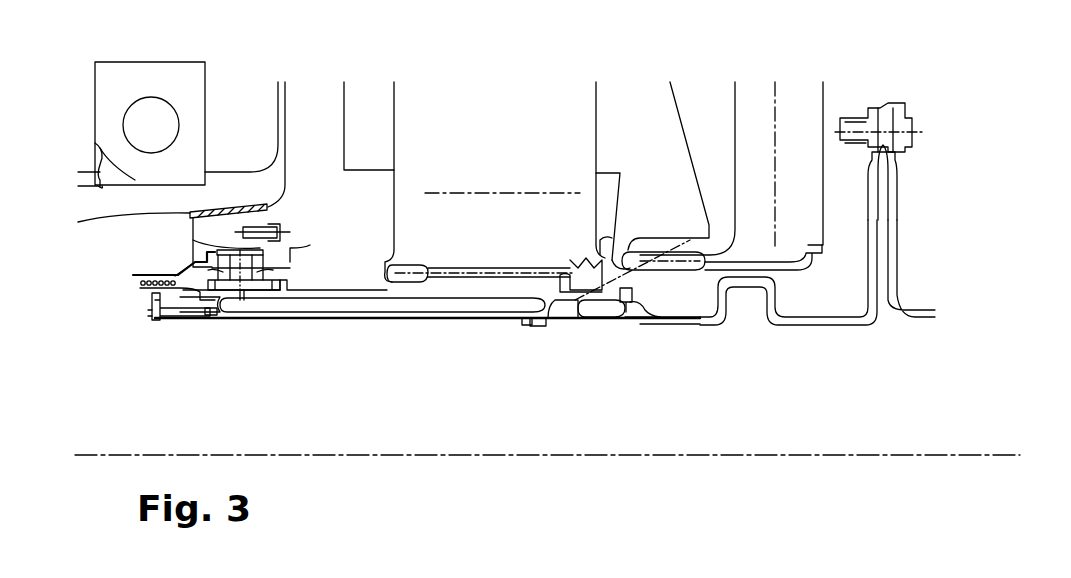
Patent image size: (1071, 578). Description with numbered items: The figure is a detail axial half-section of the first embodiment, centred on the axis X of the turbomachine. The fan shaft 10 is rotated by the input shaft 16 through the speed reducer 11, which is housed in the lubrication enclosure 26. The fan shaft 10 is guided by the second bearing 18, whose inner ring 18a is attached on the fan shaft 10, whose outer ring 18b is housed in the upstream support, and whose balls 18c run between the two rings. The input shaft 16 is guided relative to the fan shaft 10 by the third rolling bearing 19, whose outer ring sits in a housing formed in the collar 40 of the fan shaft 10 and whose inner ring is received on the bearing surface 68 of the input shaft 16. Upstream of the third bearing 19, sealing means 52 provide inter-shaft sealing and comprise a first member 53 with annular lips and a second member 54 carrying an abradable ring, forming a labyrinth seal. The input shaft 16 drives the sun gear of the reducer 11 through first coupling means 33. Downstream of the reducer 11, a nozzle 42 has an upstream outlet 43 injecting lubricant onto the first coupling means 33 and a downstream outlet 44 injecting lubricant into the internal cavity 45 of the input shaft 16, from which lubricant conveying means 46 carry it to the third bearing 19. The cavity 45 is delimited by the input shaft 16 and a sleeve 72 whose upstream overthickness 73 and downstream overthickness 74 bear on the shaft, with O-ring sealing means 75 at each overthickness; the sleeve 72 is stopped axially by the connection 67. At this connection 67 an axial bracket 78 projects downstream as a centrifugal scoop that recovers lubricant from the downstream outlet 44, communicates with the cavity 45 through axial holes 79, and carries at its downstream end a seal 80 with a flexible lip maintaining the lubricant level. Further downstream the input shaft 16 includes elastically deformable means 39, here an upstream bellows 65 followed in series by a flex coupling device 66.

The fan shaft 10 is at (85, 228).
The speed reducer 11 is at (527, 112).
The input shaft 16 is at (593, 330).
The second bearing 18 is at (142, 96).
The inner ring 18a is at (162, 80).
The outer ring 18b is at (95, 142).
The rolling elements 18c is at (157, 115).
The third rolling bearing 19 is at (285, 260).
The lubrication enclosure 26 is at (368, 191).
The first coupling means 33 is at (478, 282).
The elastically deformable means 39 is at (905, 252).
The collar 40 is at (215, 233).
The nozzle 42 is at (705, 108).
The upstream outlet 43 is at (620, 268).
The downstream outlet 44 is at (672, 278).
The internal cavity 45 is at (312, 300).
The lubricant conveying means 46 is at (600, 310).
The sealing means 52 is at (137, 282).
The first member 53 is at (140, 292).
The second member 54 is at (155, 268).
The bellows 65 is at (748, 302).
The flex coupling device 66 is at (895, 190).
The connection 67 is at (557, 323).
The bearing surface 68 is at (268, 300).
The sleeve 72 is at (360, 308).
The upstream overthickness 73 is at (215, 320).
The downstream overthickness 74 is at (532, 326).
The sealing means 75 is at (208, 318).
The axial bracket 78 is at (615, 265).
The axial holes 79 is at (566, 320).
The seal 80 is at (647, 312).
The axis X is at (826, 455).